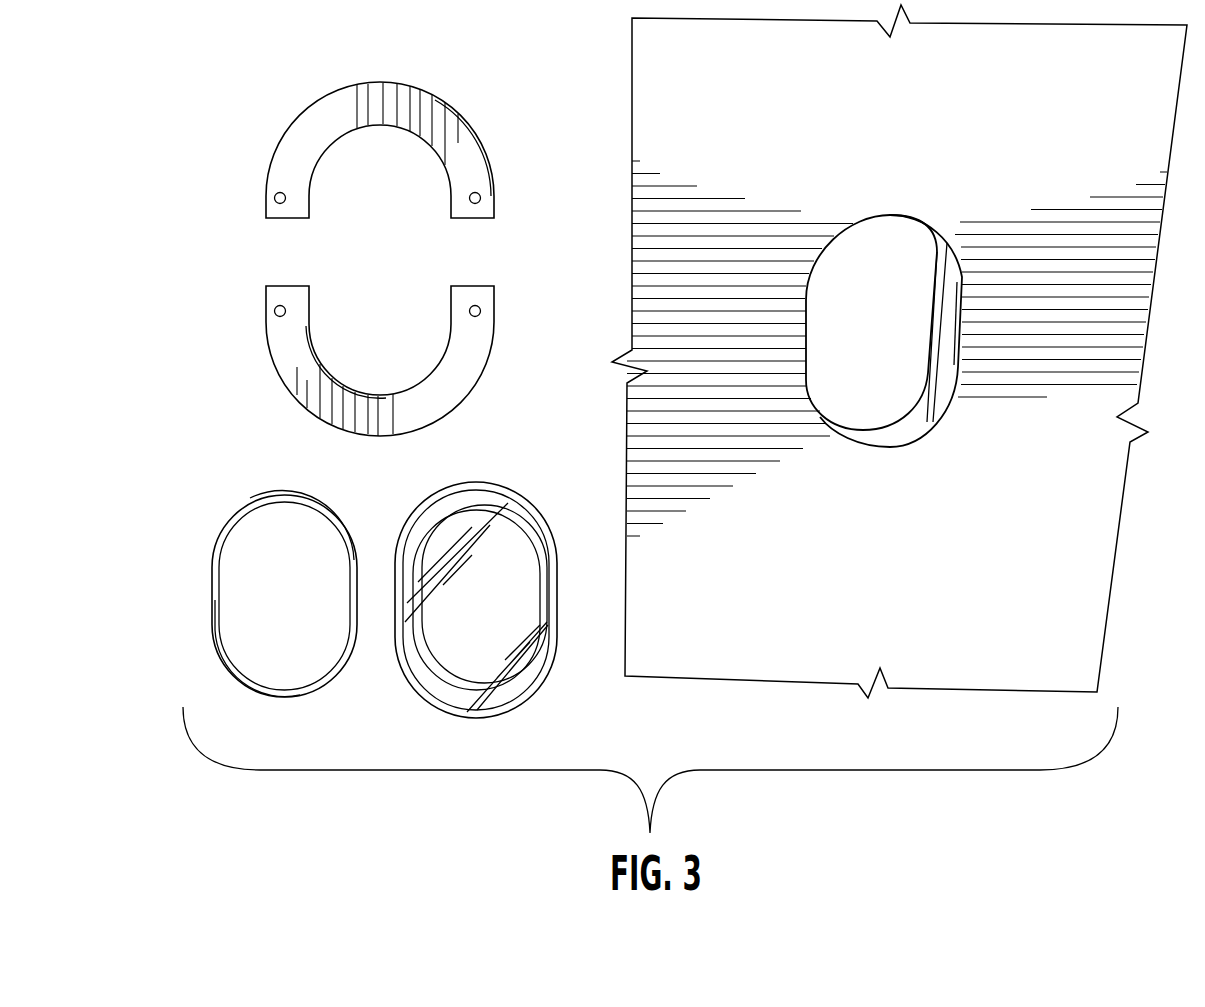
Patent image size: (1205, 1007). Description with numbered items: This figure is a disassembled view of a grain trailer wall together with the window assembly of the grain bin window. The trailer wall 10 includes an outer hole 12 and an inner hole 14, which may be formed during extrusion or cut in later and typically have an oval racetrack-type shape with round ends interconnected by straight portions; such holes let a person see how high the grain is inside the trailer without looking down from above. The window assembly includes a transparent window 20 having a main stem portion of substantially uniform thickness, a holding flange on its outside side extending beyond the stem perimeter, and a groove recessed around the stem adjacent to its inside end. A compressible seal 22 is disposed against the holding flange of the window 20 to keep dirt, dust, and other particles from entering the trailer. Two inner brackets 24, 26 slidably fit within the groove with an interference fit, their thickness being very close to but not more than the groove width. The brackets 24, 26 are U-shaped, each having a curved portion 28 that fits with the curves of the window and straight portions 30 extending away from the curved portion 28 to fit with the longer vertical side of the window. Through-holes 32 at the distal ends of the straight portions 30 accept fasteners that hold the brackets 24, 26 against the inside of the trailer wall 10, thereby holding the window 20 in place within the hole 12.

The trailer wall 10 is at (656, 88).
The outer hole 12 is at (962, 303).
The inner hole 14 is at (940, 240).
The transparent window 20 is at (500, 559).
The compressible seal 22 is at (276, 498).
The inner bracket 24 is at (294, 370).
The inner bracket 26 is at (297, 138).
The curved portion 28 is at (400, 105).
The straight portion 30 is at (460, 205).
The through-hole 32 is at (276, 306).